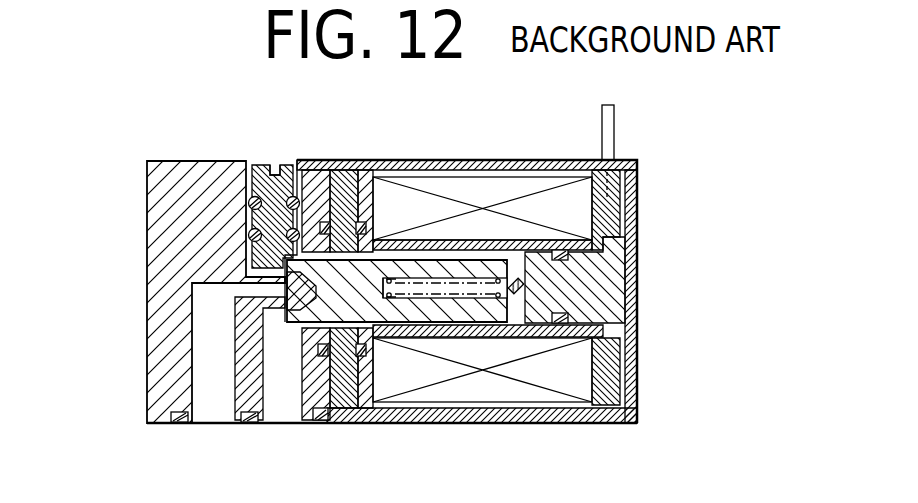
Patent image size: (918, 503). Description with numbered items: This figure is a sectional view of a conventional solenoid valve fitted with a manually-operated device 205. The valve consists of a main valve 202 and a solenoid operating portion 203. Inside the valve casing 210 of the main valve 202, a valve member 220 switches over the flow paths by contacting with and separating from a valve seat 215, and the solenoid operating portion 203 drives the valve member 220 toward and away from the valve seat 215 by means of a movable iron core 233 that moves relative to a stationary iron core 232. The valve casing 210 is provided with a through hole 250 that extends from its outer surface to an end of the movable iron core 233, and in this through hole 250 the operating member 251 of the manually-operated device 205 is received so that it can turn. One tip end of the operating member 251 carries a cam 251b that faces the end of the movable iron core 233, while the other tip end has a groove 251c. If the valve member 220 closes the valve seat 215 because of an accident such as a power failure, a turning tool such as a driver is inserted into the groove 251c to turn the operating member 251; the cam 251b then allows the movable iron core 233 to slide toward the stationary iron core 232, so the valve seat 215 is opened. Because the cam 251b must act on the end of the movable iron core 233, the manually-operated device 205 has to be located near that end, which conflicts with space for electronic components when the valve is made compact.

The main valve 202 is at (145, 198).
The solenoid operating portion 203 is at (647, 211).
The manually-operated device 205 is at (290, 144).
The valve casing 210 is at (173, 188).
The valve seat 215 is at (283, 284).
The valve member 220 is at (309, 332).
The stationary iron core 232 is at (600, 280).
The movable iron core 233 is at (485, 308).
The through hole 250 is at (256, 166).
The operating member 251 is at (295, 165).
The cam 251b is at (285, 264).
The groove 251c is at (275, 168).